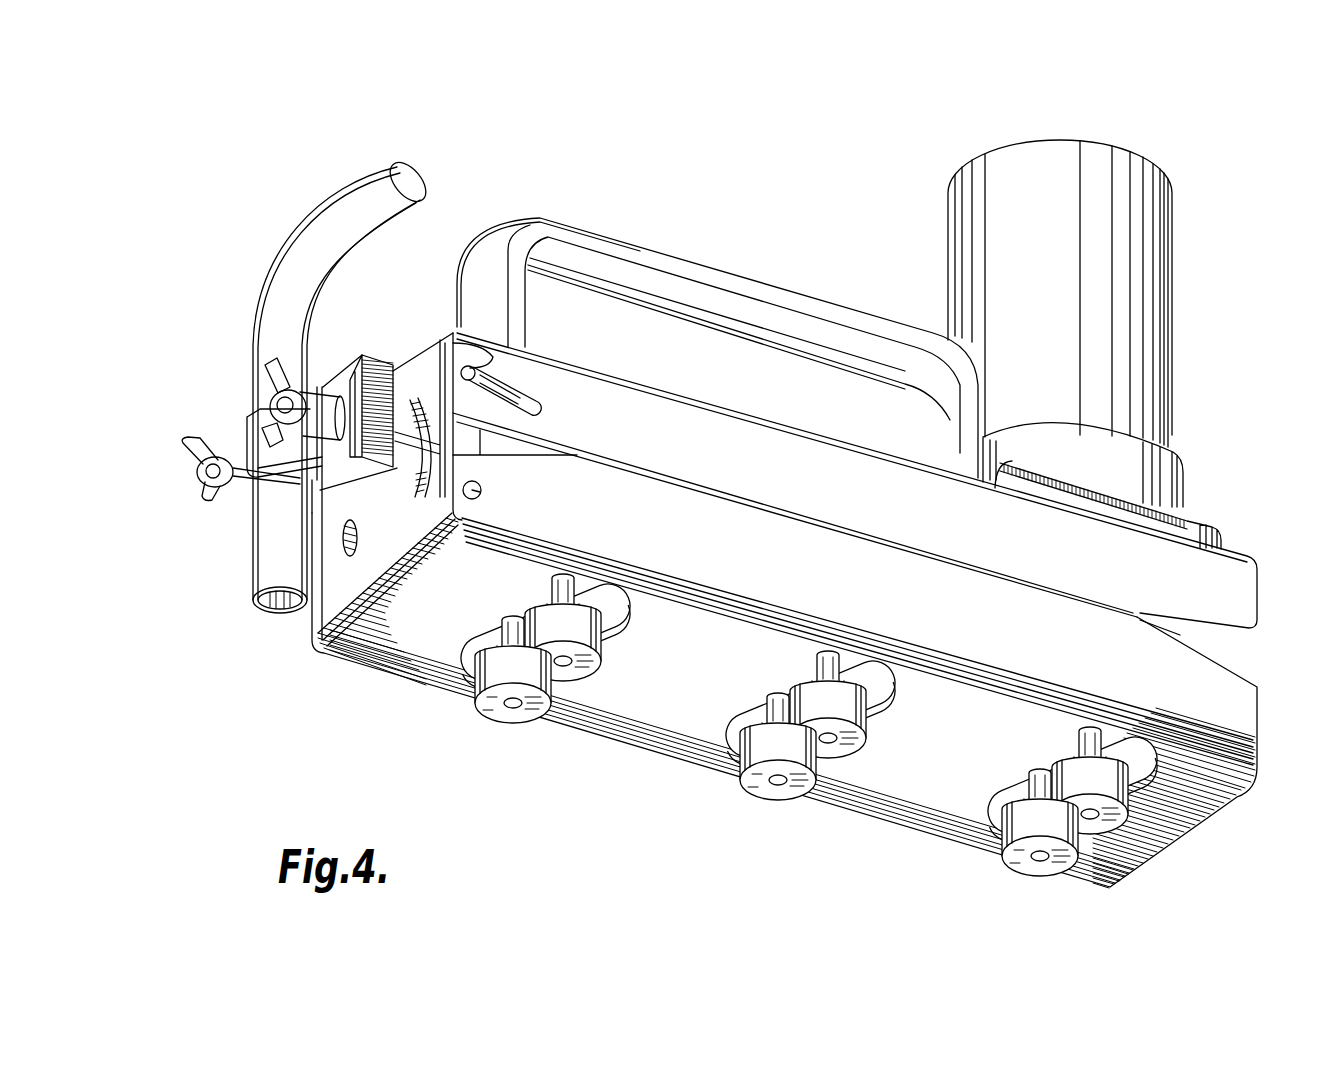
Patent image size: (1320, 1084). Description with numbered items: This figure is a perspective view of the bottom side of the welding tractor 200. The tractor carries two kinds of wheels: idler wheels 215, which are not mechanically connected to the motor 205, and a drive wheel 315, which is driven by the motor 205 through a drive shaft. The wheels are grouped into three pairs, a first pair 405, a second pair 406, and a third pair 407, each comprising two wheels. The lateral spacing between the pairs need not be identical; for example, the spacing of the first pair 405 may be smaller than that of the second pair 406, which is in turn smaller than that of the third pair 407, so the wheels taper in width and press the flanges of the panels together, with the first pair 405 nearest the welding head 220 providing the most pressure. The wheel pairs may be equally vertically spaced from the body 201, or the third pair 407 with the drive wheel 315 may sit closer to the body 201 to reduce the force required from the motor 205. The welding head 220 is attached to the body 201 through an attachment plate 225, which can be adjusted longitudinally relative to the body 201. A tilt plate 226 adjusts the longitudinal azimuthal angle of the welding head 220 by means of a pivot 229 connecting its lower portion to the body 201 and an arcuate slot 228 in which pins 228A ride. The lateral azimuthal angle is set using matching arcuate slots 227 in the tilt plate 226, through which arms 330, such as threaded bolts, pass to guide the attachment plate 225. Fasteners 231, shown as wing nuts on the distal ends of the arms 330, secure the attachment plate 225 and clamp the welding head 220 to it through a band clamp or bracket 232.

The tractor 200 is at (856, 193).
The body 201 is at (870, 500).
The motor 205 is at (1141, 145).
The idler wheels 215 is at (483, 713).
The welding head 220 is at (265, 370).
The attachment plate 225 is at (375, 360).
The tilt plate 226 is at (382, 560).
The arcuate slots 227 is at (423, 380).
The arcuate slot 228 is at (467, 365).
The pins 228A is at (440, 383).
The pivot 229 is at (485, 493).
The fasteners 231 is at (280, 358).
The band clamp or bracket 232 is at (247, 426).
The drive wheel 315 is at (1038, 863).
The arms 330 is at (350, 527).
The first pair 405 is at (563, 697).
The second pair 406 is at (834, 772).
The third pair 407 is at (1093, 843).